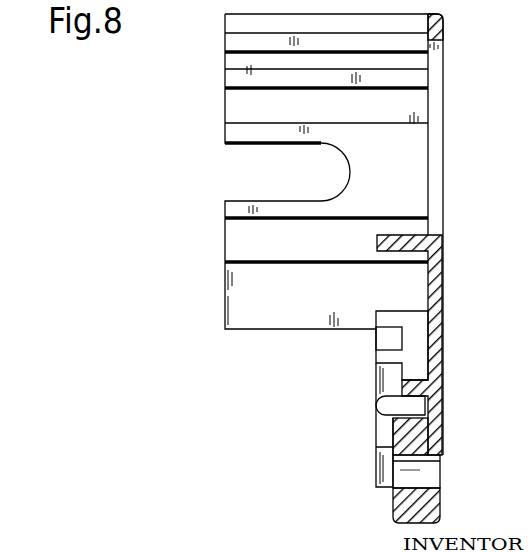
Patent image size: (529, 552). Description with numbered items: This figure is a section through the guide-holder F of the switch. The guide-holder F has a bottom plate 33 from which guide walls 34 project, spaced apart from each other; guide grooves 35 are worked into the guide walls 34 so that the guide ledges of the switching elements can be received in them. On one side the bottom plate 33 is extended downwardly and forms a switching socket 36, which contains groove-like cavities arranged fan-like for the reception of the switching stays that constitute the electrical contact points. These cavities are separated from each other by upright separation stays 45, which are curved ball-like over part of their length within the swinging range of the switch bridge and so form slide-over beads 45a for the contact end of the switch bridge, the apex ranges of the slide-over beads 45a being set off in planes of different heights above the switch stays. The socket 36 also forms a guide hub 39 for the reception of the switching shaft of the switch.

The guide-holder F is at (226, 109).
The guide grooves 35 is at (237, 62).
The guide walls 34 is at (236, 268).
The bottom plate 33 is at (441, 290).
The separation stays 45 is at (378, 353).
The slide-over beads 45a is at (383, 384).
The switching socket 36 is at (441, 428).
The guide hub 39 is at (430, 472).